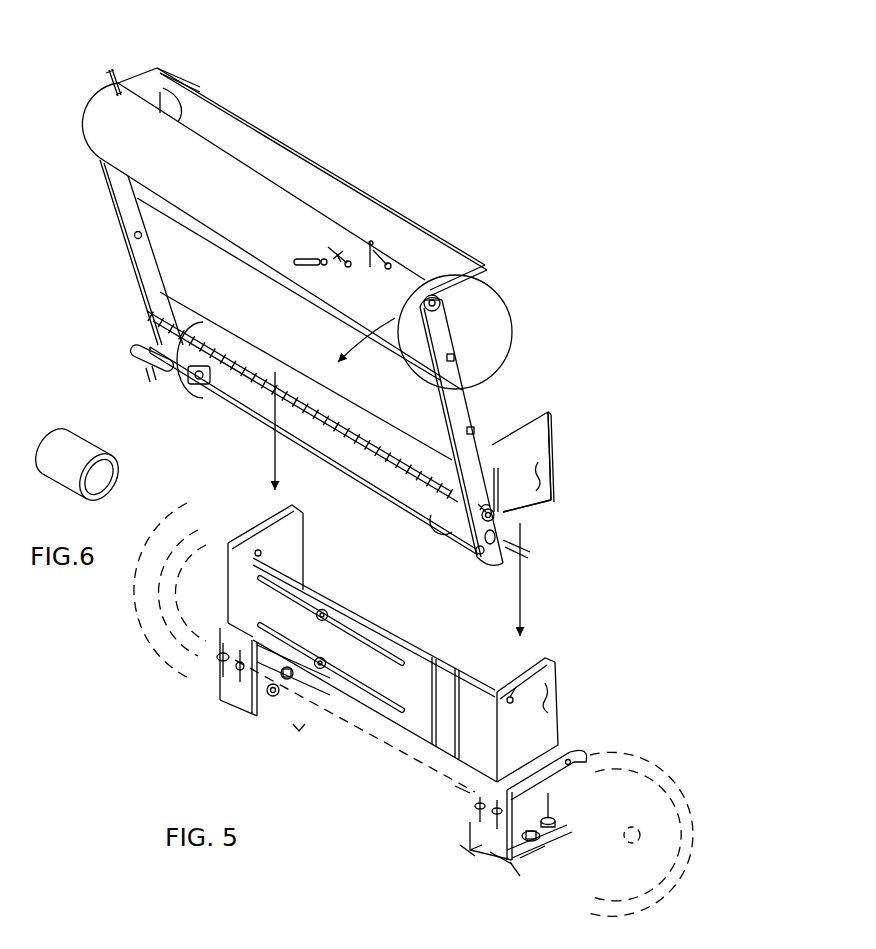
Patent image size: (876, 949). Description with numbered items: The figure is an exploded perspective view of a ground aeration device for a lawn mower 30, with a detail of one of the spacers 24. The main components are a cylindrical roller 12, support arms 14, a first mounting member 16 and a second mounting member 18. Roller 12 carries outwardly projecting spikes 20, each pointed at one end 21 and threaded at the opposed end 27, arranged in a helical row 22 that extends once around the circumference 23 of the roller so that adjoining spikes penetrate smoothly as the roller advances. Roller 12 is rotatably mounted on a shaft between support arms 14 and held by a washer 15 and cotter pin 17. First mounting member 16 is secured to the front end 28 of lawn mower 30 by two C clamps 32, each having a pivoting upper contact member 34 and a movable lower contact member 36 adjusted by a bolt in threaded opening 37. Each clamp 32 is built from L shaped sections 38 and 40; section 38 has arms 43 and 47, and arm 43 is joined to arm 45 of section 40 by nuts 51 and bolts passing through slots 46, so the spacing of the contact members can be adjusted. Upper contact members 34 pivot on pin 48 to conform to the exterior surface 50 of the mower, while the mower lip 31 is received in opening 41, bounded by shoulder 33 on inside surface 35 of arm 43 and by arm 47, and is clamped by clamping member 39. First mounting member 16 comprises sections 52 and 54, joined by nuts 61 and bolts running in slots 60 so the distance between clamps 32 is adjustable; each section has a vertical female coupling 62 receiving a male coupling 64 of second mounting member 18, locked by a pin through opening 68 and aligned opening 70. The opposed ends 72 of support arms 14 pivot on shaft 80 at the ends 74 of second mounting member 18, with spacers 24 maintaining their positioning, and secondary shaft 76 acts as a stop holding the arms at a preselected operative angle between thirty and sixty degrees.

In FIG. 5, the cylindrical roller 12 is at (243, 185).
In FIG. 5, the support arms 14 is at (140, 265).
In FIG. 5, the washer 15 is at (495, 508).
In FIG. 5, the first mounting member 16 is at (557, 690).
In FIG. 5, the cotter pin 17 is at (480, 518).
In FIG. 5, the second mounting member 18 is at (540, 474).
In FIG. 5, the spikes 20 is at (120, 84).
In FIG. 5, the pointed end 21 is at (230, 110).
In FIG. 5, the helical row 22 is at (372, 260).
In FIG. 5, the circumference 23 is at (466, 285).
In FIG. 5, the spacers 24 is at (385, 455).
In FIG. 6, the spacers 24 is at (60, 447).
In FIG. 5, the threaded end 27 is at (115, 95).
In FIG. 5, the front end 28 is at (335, 758).
In FIG. 5, the lawn mower 30 is at (395, 750).
In FIG. 5, the lip 31 is at (340, 762).
In FIG. 5, the C clamps 32 is at (497, 848).
In FIG. 5, the shoulder 33 is at (270, 696).
In FIG. 5, the upper contact member 34 is at (583, 745).
In FIG. 5, the inside surface 35 is at (293, 690).
In FIG. 5, the lower contact member 36 is at (530, 793).
In FIG. 5, the threaded opening 37 is at (546, 824).
In FIG. 5, the L shaped section 38 is at (500, 858).
In FIG. 5, the clamping member 39 is at (297, 729).
In FIG. 5, the L shaped section 40 is at (463, 788).
In FIG. 5, the opening 41 is at (523, 858).
In FIG. 5, the arm 43 is at (513, 865).
In FIG. 5, the arm 45 is at (467, 851).
In FIG. 5, the slots 46 is at (238, 677).
In FIG. 5, the arm 47 is at (577, 828).
In FIG. 5, the pin 48 is at (606, 742).
In FIG. 5, the exterior surface 50 is at (217, 598).
In FIG. 5, the nuts 51 is at (490, 818).
In FIG. 5, the section 52 is at (455, 670).
In FIG. 5, the section 54 is at (283, 572).
In FIG. 5, the slots 60 is at (360, 687).
In FIG. 5, the nuts 61 is at (322, 660).
In FIG. 5, the female coupling 62 is at (300, 513).
In FIG. 5, the male couplings 64 is at (537, 501).
In FIG. 5, the opening 68 is at (530, 662).
In FIG. 5, the opening 70 is at (508, 478).
In FIG. 5, the opposed ends 72 is at (533, 548).
In FIG. 5, the ends 74 is at (549, 465).
In FIG. 5, the secondary shaft 76 is at (367, 485).
In FIG. 5, the shaft 80 is at (495, 514).